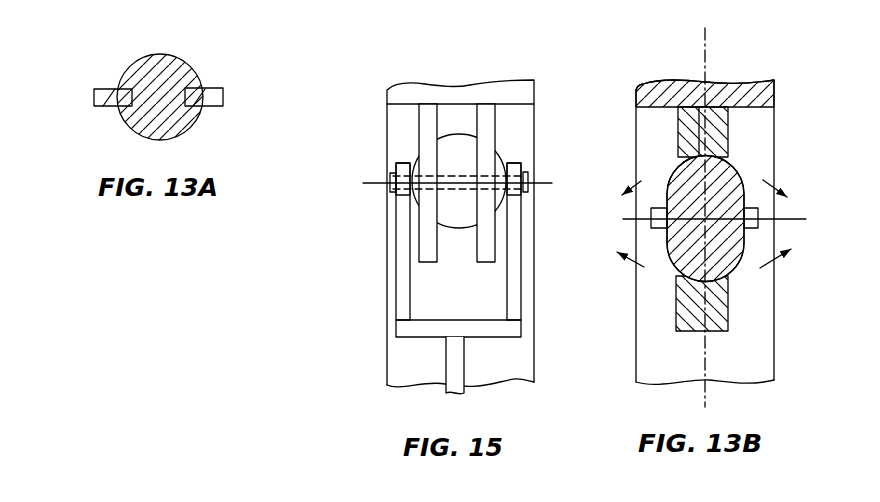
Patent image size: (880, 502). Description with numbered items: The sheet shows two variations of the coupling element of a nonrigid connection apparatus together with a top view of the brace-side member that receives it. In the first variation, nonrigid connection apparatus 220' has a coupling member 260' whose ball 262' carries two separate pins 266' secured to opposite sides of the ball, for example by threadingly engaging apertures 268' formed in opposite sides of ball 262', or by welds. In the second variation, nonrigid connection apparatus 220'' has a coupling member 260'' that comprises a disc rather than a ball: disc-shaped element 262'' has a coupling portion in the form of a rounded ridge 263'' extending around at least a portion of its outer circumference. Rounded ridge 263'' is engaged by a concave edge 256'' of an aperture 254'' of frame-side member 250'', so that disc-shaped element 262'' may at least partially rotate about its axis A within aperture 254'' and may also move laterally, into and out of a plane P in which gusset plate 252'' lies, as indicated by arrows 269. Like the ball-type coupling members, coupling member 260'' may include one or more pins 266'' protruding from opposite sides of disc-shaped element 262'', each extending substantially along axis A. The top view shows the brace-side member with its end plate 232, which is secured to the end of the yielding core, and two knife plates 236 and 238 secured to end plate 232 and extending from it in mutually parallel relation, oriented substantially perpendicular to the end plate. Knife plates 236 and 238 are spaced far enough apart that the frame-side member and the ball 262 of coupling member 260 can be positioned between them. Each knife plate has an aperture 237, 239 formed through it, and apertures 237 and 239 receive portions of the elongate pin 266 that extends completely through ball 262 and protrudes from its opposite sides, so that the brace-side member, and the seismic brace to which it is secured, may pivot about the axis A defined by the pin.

In FIG. 13A, the nonrigid connection apparatus 220' is at (149, 82).
In FIG. 13A, the coupling member 260' is at (156, 82).
In FIG. 13A, the ball 262' is at (186, 88).
In FIG. 13A, the pins 266' is at (230, 119).
In FIG. 13A, the apertures 268' is at (84, 126).
In FIG. 15, the end plate 232 is at (500, 331).
In FIG. 15, the knife plate 236 is at (400, 298).
In FIG. 15, the aperture 237 is at (400, 162).
In FIG. 15, the knife plate 238 is at (512, 298).
In FIG. 15, the aperture 239 is at (519, 166).
In FIG. 15, the coupling member 260 is at (415, 199).
In FIG. 15, the ball 262 is at (411, 196).
In FIG. 15, the elongate pin 266 is at (415, 196).
In FIG. 15, the axis A is at (372, 183).
In FIG. 13B, the axis A is at (795, 219).
In FIG. 13B, the plane P is at (704, 52).
In FIG. 13B, the nonrigid connection apparatus 220'' is at (714, 215).
In FIG. 13B, the frame-side member 250'' is at (667, 232).
In FIG. 13B, the gusset plate 252'' is at (648, 123).
In FIG. 13B, the aperture 254'' is at (736, 97).
In FIG. 13B, the concave edge 256'' is at (614, 179).
In FIG. 13B, the coupling member 260'' is at (711, 225).
In FIG. 13B, the disc-shaped element 262'' is at (755, 230).
In FIG. 13B, the rounded ridge 263'' is at (762, 221).
In FIG. 13B, the pins 266'' is at (757, 227).
In FIG. 13B, the arrows 269 is at (617, 254).